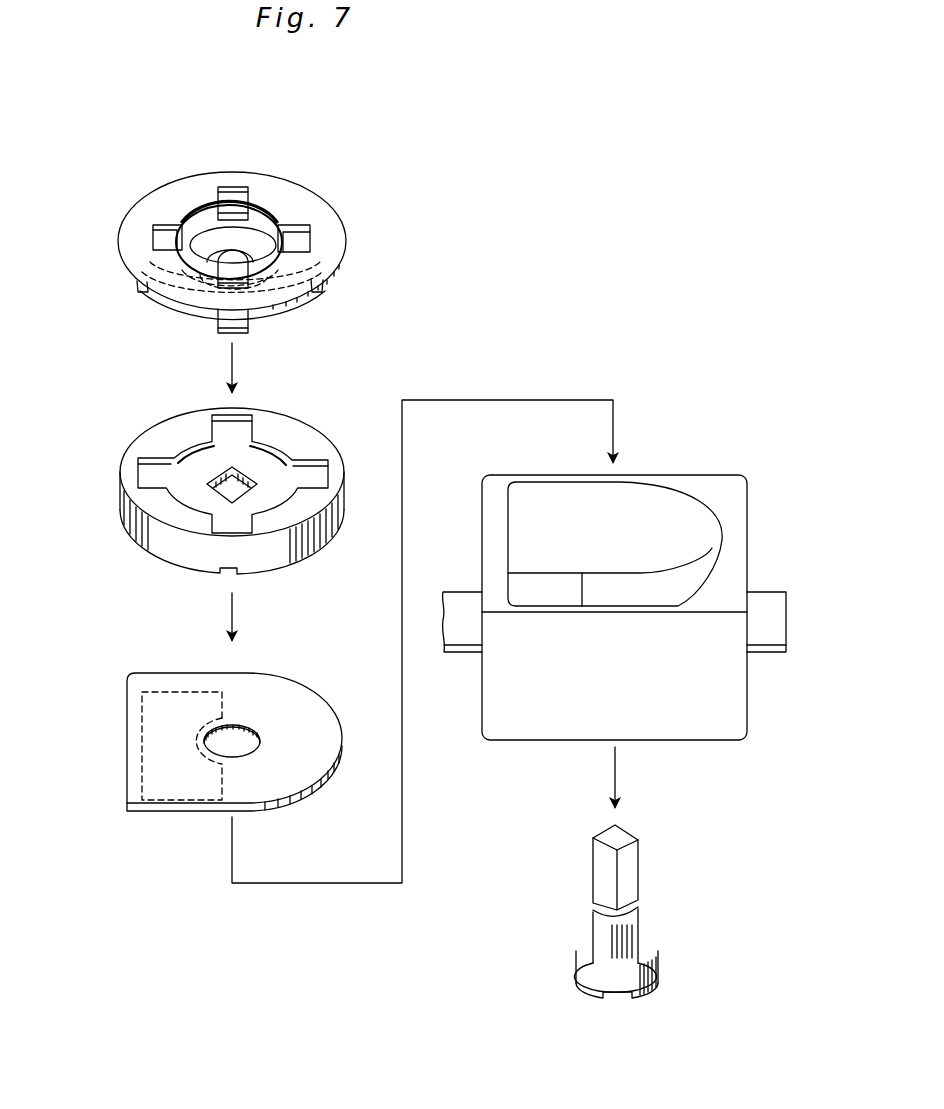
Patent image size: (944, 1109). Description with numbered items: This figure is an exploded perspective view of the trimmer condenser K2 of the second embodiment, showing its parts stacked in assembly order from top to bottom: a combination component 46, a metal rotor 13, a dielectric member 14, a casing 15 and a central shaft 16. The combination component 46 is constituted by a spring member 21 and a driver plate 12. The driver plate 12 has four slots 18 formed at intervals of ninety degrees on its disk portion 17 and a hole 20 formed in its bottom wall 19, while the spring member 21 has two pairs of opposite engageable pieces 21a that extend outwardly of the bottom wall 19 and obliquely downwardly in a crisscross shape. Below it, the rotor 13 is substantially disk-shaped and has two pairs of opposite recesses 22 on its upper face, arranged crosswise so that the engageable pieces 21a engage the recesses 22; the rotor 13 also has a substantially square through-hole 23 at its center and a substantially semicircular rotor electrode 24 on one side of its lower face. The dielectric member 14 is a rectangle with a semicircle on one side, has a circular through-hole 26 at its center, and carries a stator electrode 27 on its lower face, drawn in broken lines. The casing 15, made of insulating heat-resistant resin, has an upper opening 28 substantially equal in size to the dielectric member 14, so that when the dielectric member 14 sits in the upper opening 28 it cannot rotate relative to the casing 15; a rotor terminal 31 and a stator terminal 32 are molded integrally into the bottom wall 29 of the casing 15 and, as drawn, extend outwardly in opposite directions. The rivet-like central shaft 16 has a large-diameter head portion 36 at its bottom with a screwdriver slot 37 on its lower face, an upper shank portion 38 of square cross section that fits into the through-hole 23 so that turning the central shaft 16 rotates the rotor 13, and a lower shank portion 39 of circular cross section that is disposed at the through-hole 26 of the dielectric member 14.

The driver plate 12 is at (323, 213).
The rotor 13 is at (305, 413).
The dielectric member 14 is at (287, 673).
The casing 15 is at (697, 457).
The central shaft 16 is at (648, 853).
The disk portion 17 is at (280, 187).
The slots 18 is at (223, 190).
The bottom wall 19 is at (213, 240).
The hole 20 is at (250, 243).
The spring member 21 is at (233, 320).
The engageable pieces 21a is at (237, 207).
The recesses 22 is at (177, 450).
The through-hole 23 is at (247, 480).
The rotor electrode 24 is at (193, 563).
The through-hole 26 is at (210, 727).
The stator electrode 27 is at (140, 767).
The upper opening 28 is at (533, 487).
The bottom wall 29 is at (640, 590).
The rotor terminal 31 is at (770, 640).
The stator terminal 32 is at (533, 593).
The head portion 36 is at (653, 977).
The slot 37 is at (613, 997).
The upper shank portion 38 is at (603, 872).
The lower shank portion 39 is at (603, 925).
The combination component 46 is at (310, 180).
The trimmer condenser K2 is at (587, 373).